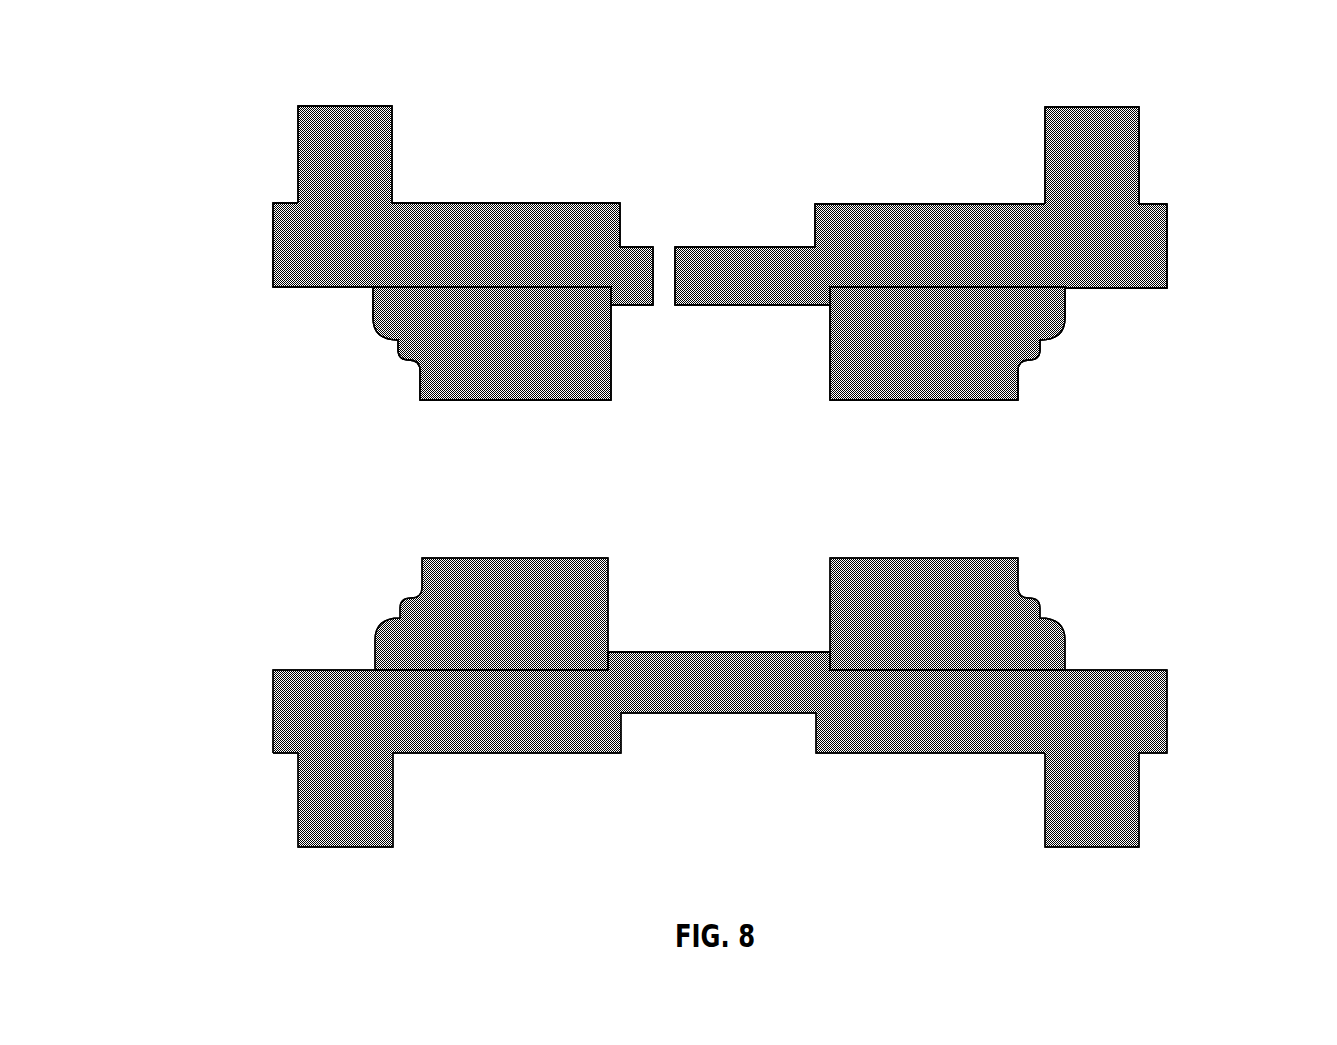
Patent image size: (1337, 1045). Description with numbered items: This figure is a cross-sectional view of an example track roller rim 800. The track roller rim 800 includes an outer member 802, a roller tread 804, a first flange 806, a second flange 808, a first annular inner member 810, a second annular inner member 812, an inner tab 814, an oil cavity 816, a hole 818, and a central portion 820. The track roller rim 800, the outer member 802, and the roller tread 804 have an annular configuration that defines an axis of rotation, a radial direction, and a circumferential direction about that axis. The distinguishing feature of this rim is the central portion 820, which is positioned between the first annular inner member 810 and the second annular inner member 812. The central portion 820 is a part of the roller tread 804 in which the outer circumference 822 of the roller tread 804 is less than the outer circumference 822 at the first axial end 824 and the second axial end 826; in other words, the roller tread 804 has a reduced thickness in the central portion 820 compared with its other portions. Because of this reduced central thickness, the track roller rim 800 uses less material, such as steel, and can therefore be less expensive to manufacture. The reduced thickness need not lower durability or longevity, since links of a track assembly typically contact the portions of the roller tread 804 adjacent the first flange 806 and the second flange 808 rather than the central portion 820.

The track roller rim 800 is at (226, 61).
The outer member 802 is at (953, 145).
The roller tread 804 is at (1167, 252).
The first flange 806 is at (298, 172).
The second flange 808 is at (1138, 170).
The first annular inner member 810 is at (610, 392).
The second annular inner member 812 is at (1018, 392).
The inner tab 814 is at (753, 305).
The oil cavity 816 is at (765, 494).
The hole 818 is at (673, 305).
The central portion 820 is at (646, 181).
The outer circumference 822 is at (545, 203).
The first axial end 824 is at (156, 331).
The second axial end 826 is at (1268, 425).